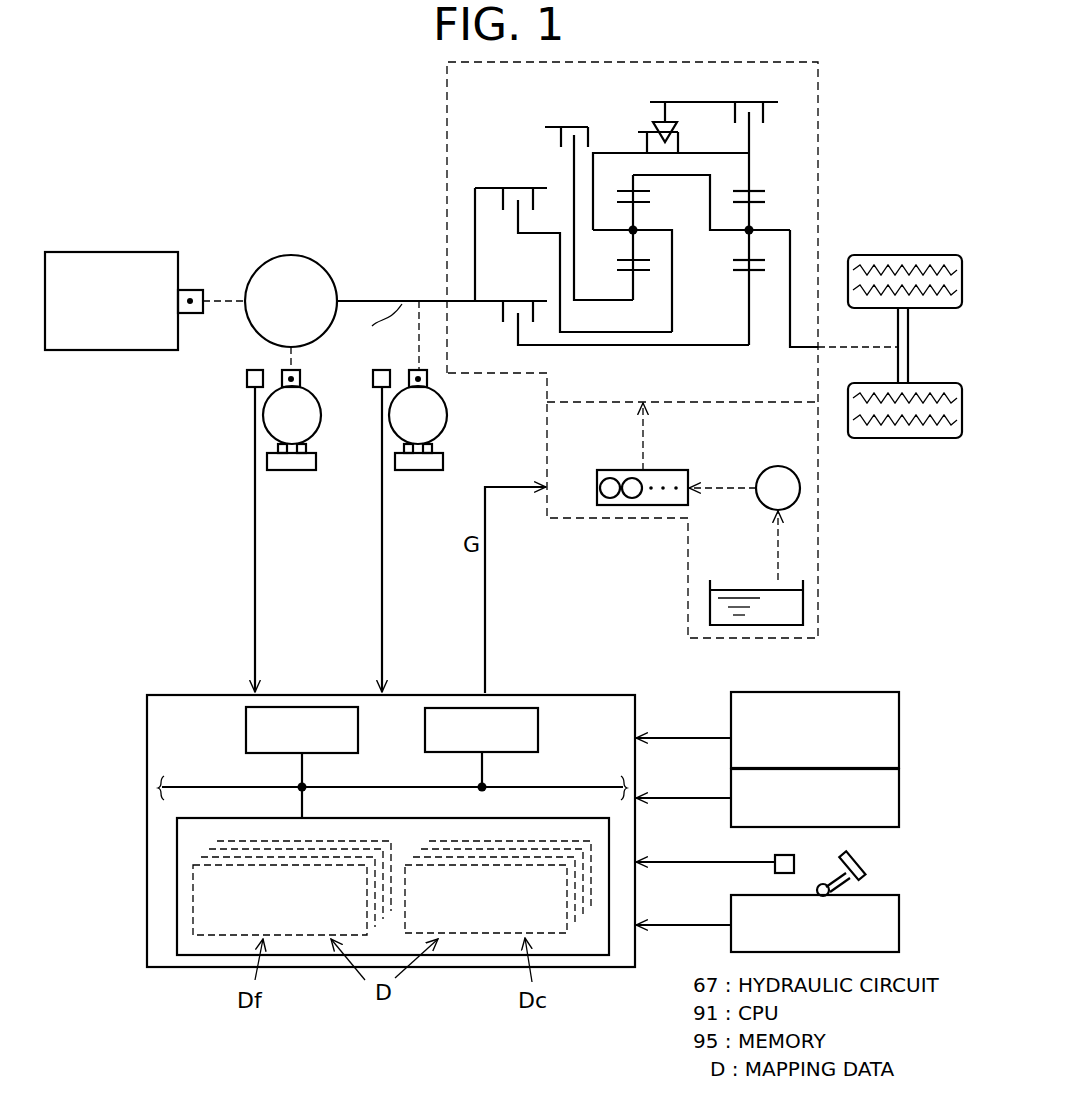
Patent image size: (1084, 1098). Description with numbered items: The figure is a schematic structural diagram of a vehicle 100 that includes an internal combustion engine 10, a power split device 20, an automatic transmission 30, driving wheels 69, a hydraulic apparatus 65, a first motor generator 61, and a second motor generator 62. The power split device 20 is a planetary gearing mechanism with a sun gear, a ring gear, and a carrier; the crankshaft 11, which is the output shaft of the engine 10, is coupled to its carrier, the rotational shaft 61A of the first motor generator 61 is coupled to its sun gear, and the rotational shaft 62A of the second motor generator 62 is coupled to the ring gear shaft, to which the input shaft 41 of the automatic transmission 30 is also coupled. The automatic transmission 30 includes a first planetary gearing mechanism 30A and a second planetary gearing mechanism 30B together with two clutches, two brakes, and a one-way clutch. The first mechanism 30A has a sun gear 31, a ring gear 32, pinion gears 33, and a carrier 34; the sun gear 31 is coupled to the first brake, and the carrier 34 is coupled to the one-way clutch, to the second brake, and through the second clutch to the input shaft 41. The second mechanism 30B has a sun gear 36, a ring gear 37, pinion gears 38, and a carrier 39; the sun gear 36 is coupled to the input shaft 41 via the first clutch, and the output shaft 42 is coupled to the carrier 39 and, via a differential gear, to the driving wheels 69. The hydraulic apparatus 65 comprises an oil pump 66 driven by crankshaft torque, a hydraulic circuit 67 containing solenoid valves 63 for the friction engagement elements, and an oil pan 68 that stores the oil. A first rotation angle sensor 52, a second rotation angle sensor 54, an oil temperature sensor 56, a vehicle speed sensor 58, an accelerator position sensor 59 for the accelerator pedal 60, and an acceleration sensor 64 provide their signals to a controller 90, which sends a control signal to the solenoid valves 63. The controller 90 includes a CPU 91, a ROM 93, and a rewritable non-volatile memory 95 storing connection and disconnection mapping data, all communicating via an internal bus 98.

The vehicle 100 is at (210, 148).
The internal combustion engine 10 is at (137, 252).
The crankshaft 11 is at (190, 290).
The power split device 20 is at (337, 273).
The automatic transmission 30 is at (447, 85).
The first planetary gearing mechanism 30A is at (679, 291).
The second planetary gearing mechanism 30B is at (792, 192).
The sun gear 31 is at (587, 305).
The ring gear 32 is at (685, 175).
The pinion gears 33 is at (637, 210).
The carrier 34 is at (616, 153).
The sun gear 36 is at (750, 327).
The ring gear 37 is at (752, 160).
The pinion gears 38 is at (752, 213).
The carrier 39 is at (790, 252).
The input shaft 41 is at (464, 304).
The output shaft 42 is at (810, 348).
The first rotation angle sensor 52 is at (250, 392).
The second rotation angle sensor 54 is at (378, 392).
The oil temperature sensor 56 is at (903, 735).
The vehicle speed sensor 58 is at (903, 797).
The accelerator position sensor 59 is at (787, 855).
The accelerator pedal 60 is at (860, 854).
The first motor generator 61 is at (318, 430).
The rotational shaft 61A is at (303, 373).
The second motor generator 62 is at (448, 417).
The rotational shaft 62A is at (428, 382).
The solenoid valves 63 is at (602, 470).
The acceleration sensor 64 is at (903, 924).
The hydraulic apparatus 65 is at (820, 462).
The oil pump 66 is at (773, 467).
The hydraulic circuit 67 is at (651, 454).
The oil pan 68 is at (803, 607).
The driving wheels 69 is at (903, 255).
The controller 90 is at (170, 694).
The central processing unit 91 is at (360, 729).
The read-only memory 93 is at (540, 728).
The memory 95 is at (335, 817).
The internal bus 98 is at (527, 787).